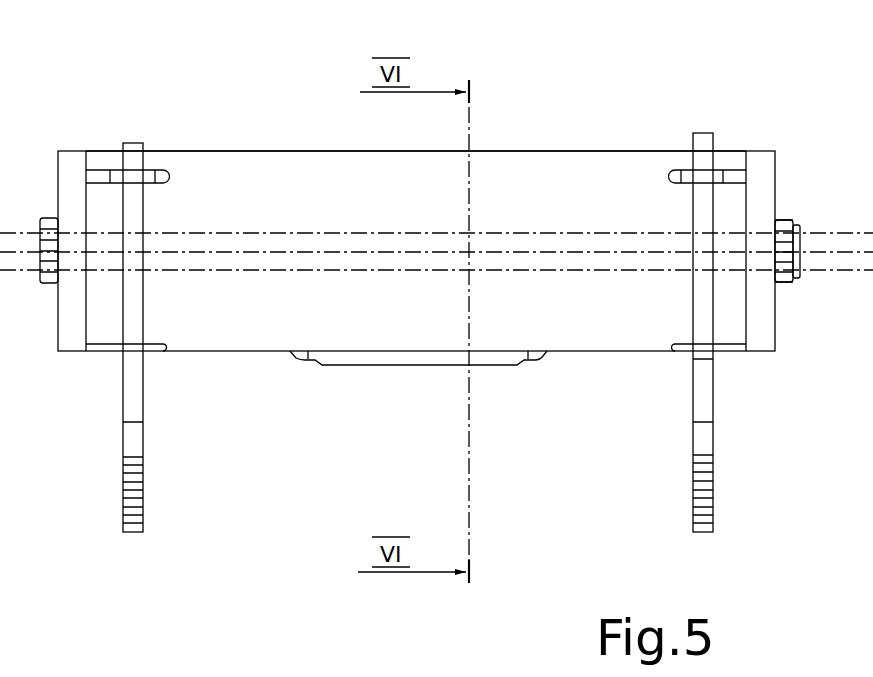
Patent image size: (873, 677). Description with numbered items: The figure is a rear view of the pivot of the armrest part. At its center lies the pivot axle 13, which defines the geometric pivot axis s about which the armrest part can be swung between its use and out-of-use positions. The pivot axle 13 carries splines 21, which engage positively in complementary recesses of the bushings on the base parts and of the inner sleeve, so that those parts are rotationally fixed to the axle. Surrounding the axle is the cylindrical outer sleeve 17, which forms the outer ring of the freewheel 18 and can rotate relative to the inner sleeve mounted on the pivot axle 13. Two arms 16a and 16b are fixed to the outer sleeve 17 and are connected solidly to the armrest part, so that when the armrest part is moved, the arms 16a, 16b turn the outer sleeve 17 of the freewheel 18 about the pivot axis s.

The pivot axle 13 is at (41, 215).
The arm 16a is at (127, 378).
The arm 16b is at (699, 394).
The cylindrical outer sleeve 17 is at (554, 186).
The freewheel 18 is at (621, 143).
The splines 21 is at (783, 284).
The geometric pivot axis s is at (838, 251).